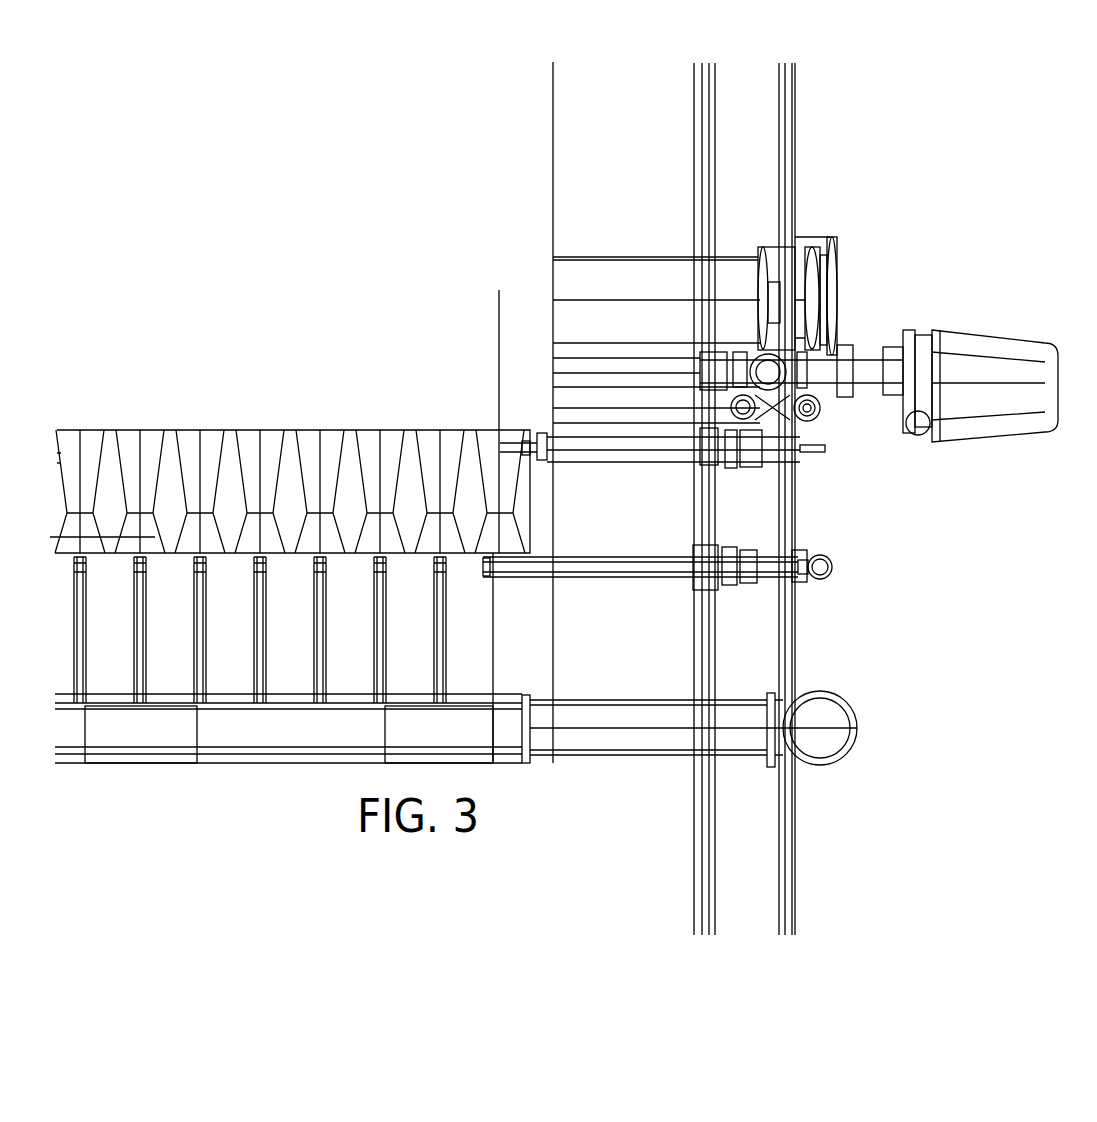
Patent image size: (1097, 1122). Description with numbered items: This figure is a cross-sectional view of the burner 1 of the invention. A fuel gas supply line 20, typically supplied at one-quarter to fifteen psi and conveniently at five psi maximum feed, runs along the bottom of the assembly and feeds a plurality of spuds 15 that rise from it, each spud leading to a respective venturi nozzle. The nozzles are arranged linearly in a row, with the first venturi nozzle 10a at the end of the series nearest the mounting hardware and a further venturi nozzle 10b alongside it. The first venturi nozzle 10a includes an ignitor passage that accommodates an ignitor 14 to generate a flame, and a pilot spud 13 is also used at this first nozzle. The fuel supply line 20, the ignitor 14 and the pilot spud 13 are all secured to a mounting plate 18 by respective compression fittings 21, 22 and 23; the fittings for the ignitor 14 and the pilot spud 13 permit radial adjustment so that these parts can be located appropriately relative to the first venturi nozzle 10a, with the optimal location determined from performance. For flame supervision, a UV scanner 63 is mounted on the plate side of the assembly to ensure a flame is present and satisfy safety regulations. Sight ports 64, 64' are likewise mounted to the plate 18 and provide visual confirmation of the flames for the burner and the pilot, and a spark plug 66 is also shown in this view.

The burner 1 is at (114, 420).
The first venturi nozzle 10a is at (488, 435).
The venturi nozzle 10b is at (425, 438).
The pilot spud 13 is at (615, 556).
The ignitor 14 is at (625, 455).
The spuds 15 is at (385, 614).
The mounting plate 18 is at (712, 217).
The fuel gas supply line 20 is at (625, 740).
The compression fitting 21 is at (712, 700).
The compression fitting 22 is at (722, 545).
The compression fitting 23 is at (725, 467).
The UV scanner 63 is at (1033, 348).
The sight port 64 is at (828, 296).
The sight port 64' is at (834, 430).
The spark plug 66 is at (807, 452).